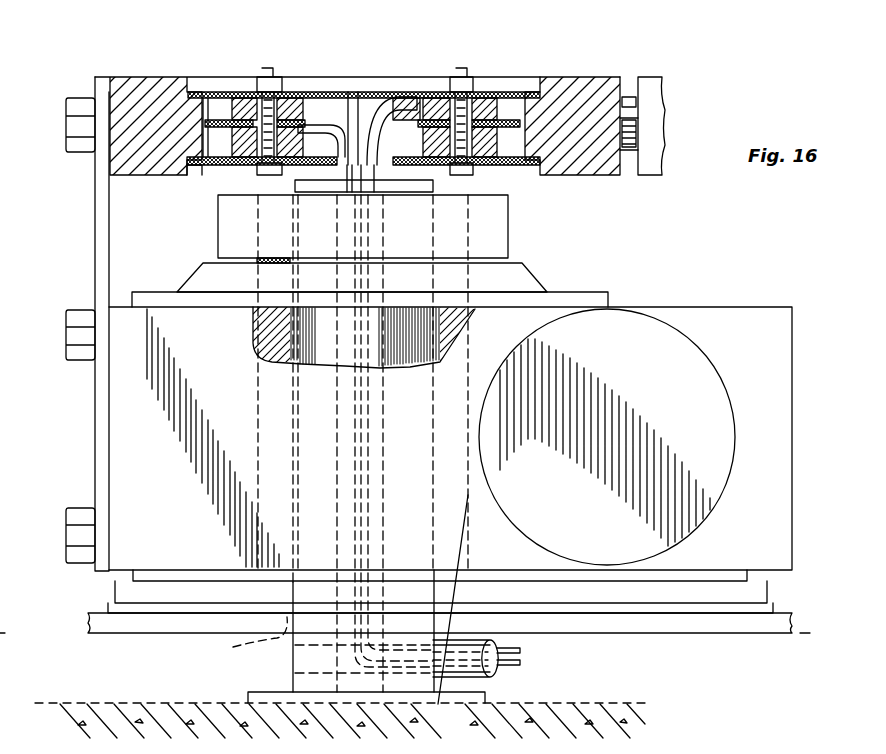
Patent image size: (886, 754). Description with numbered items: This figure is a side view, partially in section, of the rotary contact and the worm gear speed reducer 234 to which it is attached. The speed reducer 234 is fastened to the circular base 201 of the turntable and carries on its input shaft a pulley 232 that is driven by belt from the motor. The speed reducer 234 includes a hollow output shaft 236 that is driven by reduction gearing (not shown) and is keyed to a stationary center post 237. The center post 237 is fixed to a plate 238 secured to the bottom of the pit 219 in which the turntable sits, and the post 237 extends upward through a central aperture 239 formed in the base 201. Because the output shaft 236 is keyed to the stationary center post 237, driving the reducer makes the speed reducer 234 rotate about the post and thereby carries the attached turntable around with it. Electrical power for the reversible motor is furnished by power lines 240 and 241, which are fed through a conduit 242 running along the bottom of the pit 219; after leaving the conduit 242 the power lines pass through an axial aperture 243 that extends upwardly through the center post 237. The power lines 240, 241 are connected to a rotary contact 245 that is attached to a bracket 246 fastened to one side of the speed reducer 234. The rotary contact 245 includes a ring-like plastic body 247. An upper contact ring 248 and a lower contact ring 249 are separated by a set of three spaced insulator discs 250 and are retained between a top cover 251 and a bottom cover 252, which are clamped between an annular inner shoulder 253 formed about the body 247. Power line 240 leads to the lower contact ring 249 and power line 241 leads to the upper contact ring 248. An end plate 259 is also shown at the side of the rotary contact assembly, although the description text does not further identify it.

The circular base 201 is at (88, 622).
The pit 219 is at (102, 703).
The pulley 232 is at (657, 380).
The worm gear speed reducer 234 is at (755, 307).
The hollow output shaft 236 is at (463, 322).
The stationary center post 237 is at (433, 188).
The plate 238 is at (248, 691).
The central aperture 239 is at (240, 638).
The power line 240 is at (345, 92).
The power line 241 is at (378, 95).
The conduit 242 is at (500, 680).
The axial aperture 243 is at (385, 352).
The rotary contact 245 is at (148, 77).
The bracket 246 is at (96, 242).
The ring-like plastic body 247 is at (565, 77).
The upper contact ring 248 is at (393, 131).
The lower contact ring 249 is at (309, 125).
The insulator discs 250 is at (220, 92).
The top cover 251 is at (352, 90).
The bottom cover 252 is at (190, 176).
The annular inner shoulder 253 is at (527, 105).
The end plate 259 is at (655, 80).